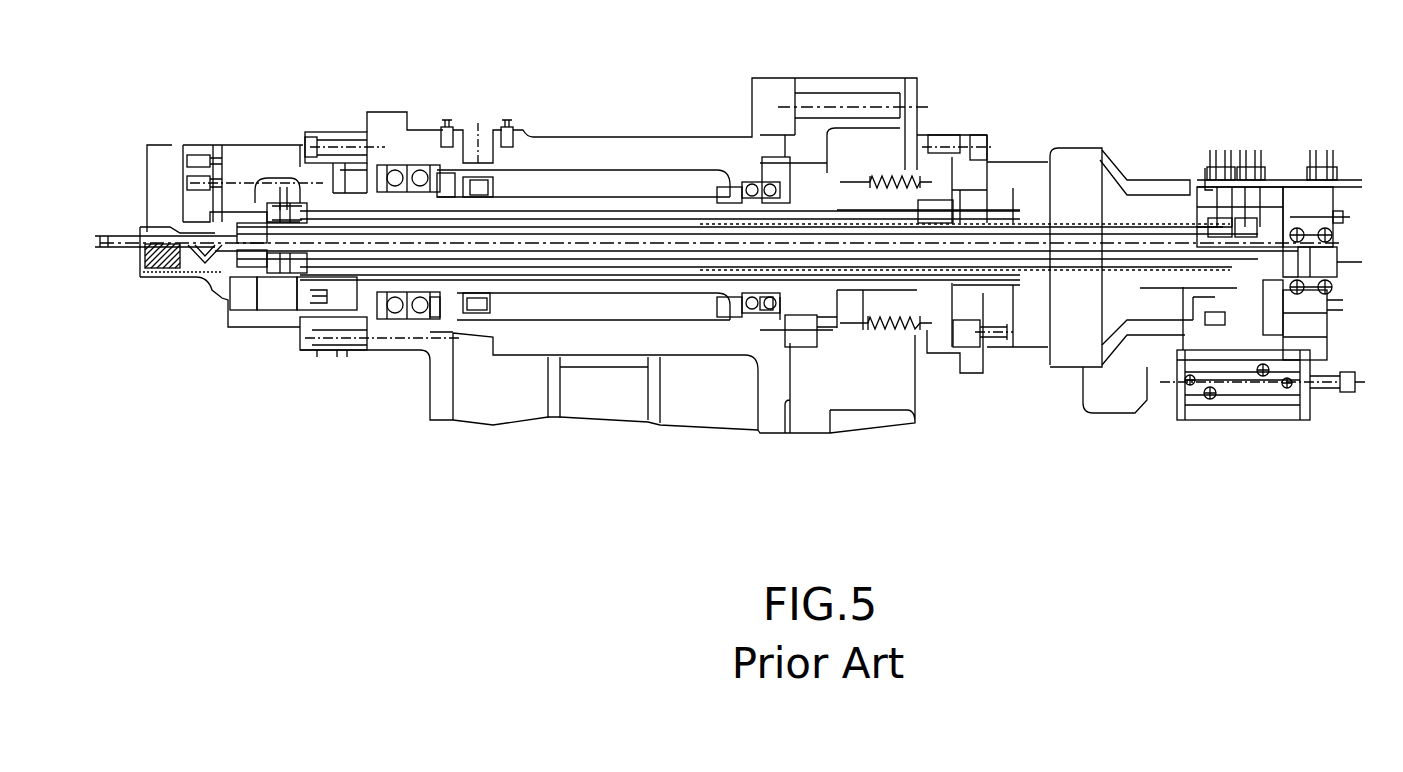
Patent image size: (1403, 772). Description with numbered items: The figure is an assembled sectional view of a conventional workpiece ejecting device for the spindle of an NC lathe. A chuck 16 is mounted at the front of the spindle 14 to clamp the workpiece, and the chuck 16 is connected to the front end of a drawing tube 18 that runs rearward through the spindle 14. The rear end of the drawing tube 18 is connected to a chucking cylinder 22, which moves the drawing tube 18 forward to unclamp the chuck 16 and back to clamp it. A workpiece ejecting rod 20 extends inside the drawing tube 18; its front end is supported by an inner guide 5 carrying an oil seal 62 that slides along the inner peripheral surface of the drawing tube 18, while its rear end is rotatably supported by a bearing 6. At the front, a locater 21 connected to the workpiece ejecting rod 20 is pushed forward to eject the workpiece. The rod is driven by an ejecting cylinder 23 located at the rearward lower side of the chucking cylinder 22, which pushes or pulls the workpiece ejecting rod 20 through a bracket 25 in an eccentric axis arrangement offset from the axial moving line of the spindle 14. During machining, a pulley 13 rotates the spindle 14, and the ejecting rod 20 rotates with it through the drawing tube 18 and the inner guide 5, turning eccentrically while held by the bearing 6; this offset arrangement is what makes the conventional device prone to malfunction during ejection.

The chuck 16 is at (248, 150).
The oil seal 62 is at (274, 205).
The inner guide 5 is at (300, 200).
The locater 21 is at (140, 225).
The workpiece ejecting rod 20 is at (551, 237).
The spindle 14 is at (598, 203).
The drawing tube 18 is at (648, 215).
The pulley 13 is at (887, 197).
The chucking cylinder 22 is at (1080, 152).
The bearing 6 is at (1297, 232).
The bracket 25 is at (1328, 350).
The ejecting cylinder 23 is at (1237, 393).